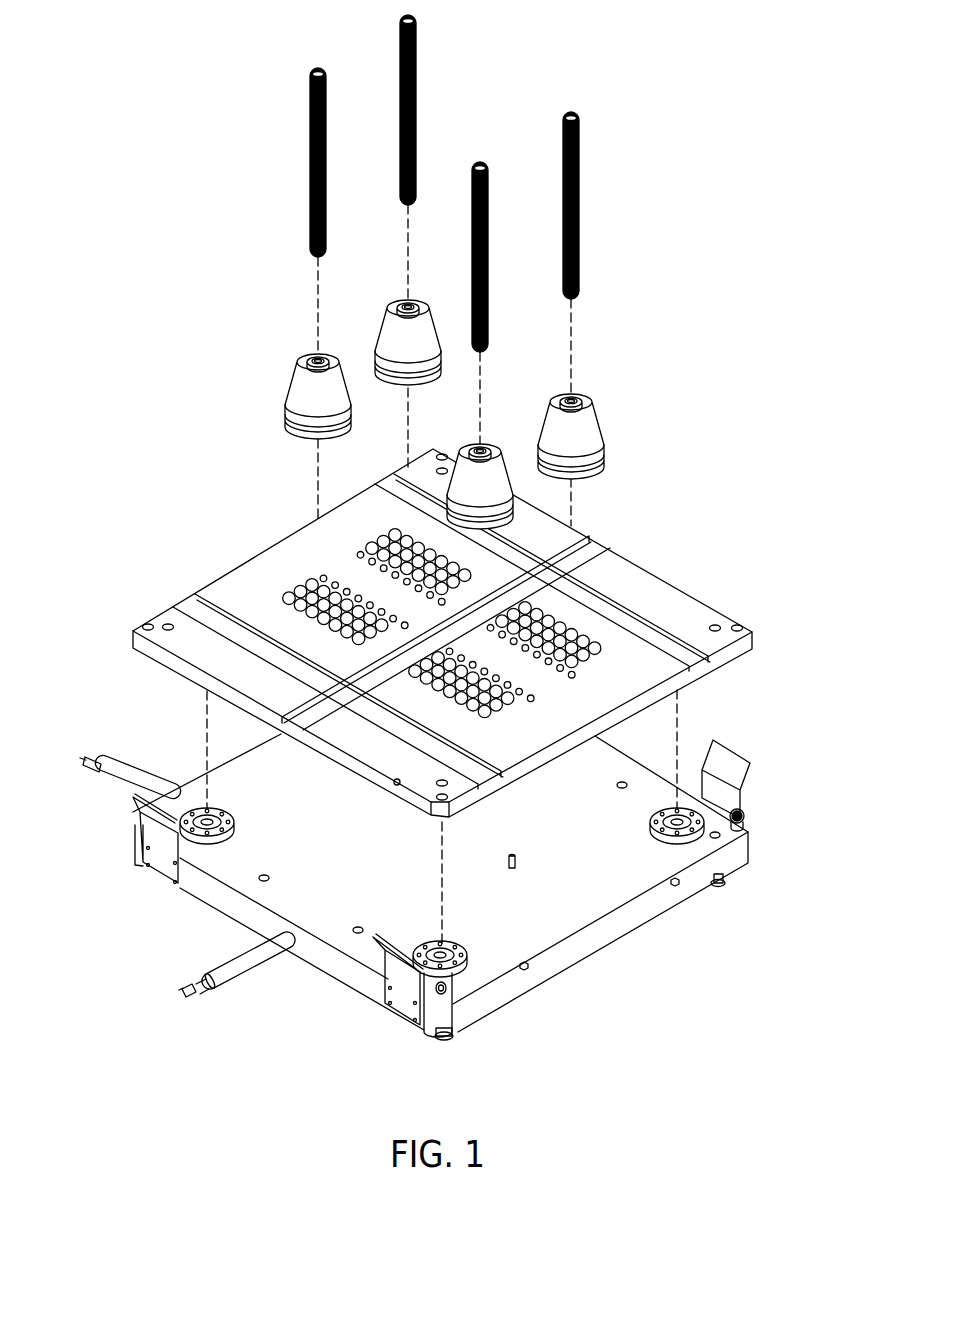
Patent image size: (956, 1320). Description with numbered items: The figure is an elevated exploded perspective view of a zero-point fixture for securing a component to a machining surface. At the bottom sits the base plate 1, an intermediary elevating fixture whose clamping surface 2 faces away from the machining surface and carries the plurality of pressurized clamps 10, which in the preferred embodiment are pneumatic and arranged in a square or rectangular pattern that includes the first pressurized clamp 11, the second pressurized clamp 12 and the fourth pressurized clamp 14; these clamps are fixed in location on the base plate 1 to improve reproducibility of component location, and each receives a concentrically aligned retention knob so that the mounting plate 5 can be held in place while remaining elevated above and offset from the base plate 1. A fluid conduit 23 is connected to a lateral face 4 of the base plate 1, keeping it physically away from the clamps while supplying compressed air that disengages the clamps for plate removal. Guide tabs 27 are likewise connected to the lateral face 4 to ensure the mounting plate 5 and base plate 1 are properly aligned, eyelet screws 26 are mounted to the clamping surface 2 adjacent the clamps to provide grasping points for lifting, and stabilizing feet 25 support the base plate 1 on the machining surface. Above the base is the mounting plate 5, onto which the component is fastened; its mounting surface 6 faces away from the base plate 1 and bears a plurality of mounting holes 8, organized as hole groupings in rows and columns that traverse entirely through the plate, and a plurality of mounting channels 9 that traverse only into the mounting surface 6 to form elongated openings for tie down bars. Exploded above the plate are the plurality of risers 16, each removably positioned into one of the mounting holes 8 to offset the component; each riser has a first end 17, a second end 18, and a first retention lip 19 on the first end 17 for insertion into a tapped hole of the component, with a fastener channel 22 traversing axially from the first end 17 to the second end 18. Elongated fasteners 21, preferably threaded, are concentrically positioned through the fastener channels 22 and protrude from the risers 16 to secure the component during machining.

The base plate 1 is at (640, 948).
The clamping surface 2 is at (340, 839).
The lateral face 4 is at (313, 957).
The mounting plate 5 is at (223, 552).
The mounting surface 6 is at (618, 580).
The plurality of mounting holes 8 is at (392, 628).
The plurality of mounting channels 9 is at (401, 477).
The plurality of pressurized clamps 10 is at (407, 944).
The first pressurized clamp 11 is at (229, 815).
The second pressurized clamp 12 is at (456, 945).
The fourth pressurized clamp 14 is at (658, 840).
The plurality of risers 16 is at (272, 389).
The first end 17 is at (329, 357).
The second end 18 is at (305, 439).
The first retention lip 19 is at (336, 371).
The plurality of elongated fasteners 21 is at (322, 70).
The plurality of fastener channels 22 is at (315, 359).
The at least one fluid conduit 23 is at (222, 968).
The plurality of stabilizing feet 25 is at (460, 1038).
The plurality of eyelet screws 26 is at (453, 989).
The plurality of guide tabs 27 is at (180, 850).